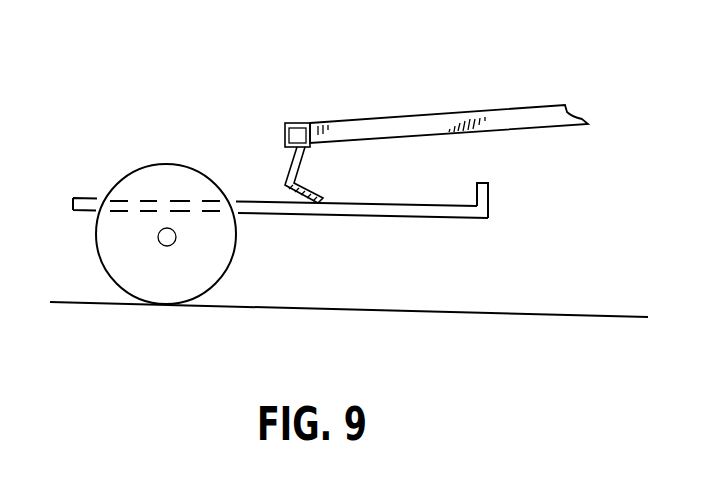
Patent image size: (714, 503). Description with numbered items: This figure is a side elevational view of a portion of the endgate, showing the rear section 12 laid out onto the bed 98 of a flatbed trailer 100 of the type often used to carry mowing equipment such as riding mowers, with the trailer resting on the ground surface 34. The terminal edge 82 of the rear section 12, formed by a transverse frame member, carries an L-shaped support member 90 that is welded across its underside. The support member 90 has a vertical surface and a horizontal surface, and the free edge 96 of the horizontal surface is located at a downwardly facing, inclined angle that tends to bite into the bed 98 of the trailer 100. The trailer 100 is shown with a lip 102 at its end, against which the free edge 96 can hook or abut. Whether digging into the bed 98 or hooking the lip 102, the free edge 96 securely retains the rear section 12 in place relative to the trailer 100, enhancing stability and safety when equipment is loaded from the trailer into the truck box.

The rear section 12 is at (418, 114).
The ground surface 34 is at (528, 312).
The terminal edge 82 is at (274, 126).
The support member 90 is at (304, 184).
The free edge 96 is at (325, 202).
The bed 98 is at (87, 197).
The flatbed trailer 100 is at (235, 197).
The lip 102 is at (492, 196).